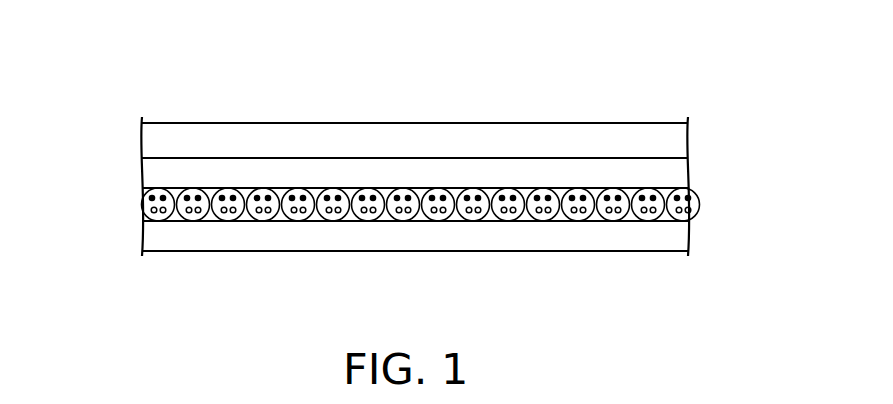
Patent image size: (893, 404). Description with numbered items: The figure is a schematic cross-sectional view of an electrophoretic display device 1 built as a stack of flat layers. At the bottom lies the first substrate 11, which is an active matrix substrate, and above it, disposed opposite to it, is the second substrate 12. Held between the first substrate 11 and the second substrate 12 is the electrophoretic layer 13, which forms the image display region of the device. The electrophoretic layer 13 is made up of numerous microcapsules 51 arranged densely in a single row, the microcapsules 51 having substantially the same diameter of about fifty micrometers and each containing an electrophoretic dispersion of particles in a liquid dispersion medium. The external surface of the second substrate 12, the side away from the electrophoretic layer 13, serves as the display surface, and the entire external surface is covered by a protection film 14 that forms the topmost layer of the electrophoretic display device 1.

The electrophoretic display device 1 is at (638, 104).
The first substrate 11 is at (147, 237).
The second substrate 12 is at (147, 175).
The electrophoretic layer 13 is at (377, 252).
The protection film 14 is at (147, 140).
The microcapsules 51 is at (402, 213).